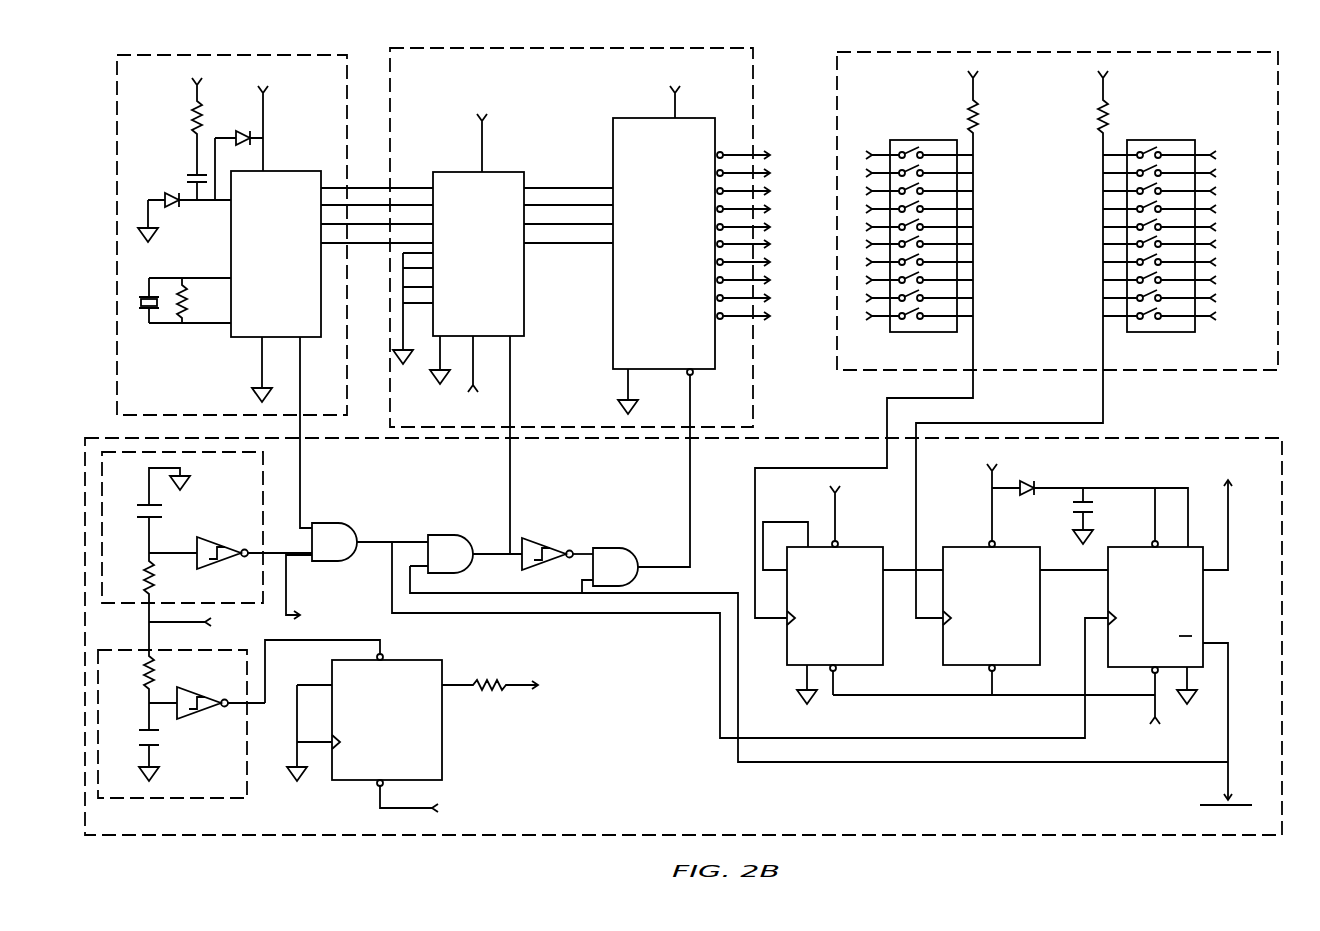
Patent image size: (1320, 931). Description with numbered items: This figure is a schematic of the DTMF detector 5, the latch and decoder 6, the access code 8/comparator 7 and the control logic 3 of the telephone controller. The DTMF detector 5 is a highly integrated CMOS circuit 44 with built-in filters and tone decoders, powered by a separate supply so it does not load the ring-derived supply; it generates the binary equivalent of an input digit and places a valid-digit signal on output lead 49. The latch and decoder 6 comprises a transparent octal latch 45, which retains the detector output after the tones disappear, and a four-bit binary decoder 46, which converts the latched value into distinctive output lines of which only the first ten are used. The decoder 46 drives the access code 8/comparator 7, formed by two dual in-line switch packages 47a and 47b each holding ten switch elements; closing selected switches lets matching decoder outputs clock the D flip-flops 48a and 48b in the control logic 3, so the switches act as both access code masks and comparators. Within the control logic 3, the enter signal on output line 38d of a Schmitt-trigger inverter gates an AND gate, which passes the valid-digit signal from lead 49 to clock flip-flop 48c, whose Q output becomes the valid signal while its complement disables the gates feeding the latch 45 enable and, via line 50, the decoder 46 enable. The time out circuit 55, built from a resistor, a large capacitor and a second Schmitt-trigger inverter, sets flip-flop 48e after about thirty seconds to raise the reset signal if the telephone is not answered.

The control logic 3 is at (956, 829).
The DTMF detector 5 is at (362, 37).
The latch and decoder 6 is at (763, 94).
The comparator 7 is at (1283, 97).
The access code 8 is at (1067, 198).
The output line of Schmitt-trigger inverter U2C 38d is at (268, 484).
The highly integrated CMOS circuit 44 is at (251, 320).
The latch 45 is at (513, 316).
The four-bit binary decoder 46 is at (625, 334).
The switch package 47a is at (925, 332).
The switch package 47b is at (1152, 332).
The clock component 48a is at (798, 648).
The clock component 48b is at (957, 652).
The D flip-flop 48c is at (1185, 618).
The D flip-flop 48e is at (345, 767).
The output lead 49 is at (300, 471).
The line 50 is at (689, 467).
The time out circuit 55 is at (213, 790).